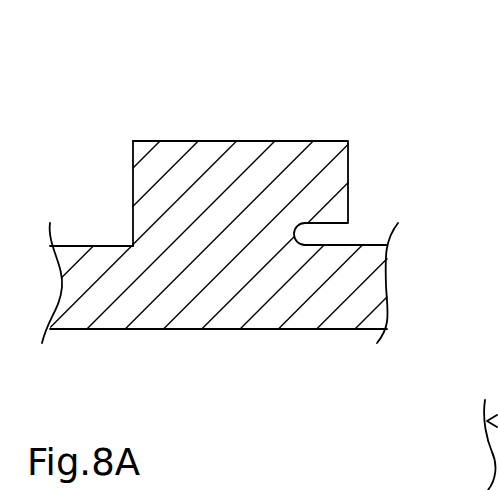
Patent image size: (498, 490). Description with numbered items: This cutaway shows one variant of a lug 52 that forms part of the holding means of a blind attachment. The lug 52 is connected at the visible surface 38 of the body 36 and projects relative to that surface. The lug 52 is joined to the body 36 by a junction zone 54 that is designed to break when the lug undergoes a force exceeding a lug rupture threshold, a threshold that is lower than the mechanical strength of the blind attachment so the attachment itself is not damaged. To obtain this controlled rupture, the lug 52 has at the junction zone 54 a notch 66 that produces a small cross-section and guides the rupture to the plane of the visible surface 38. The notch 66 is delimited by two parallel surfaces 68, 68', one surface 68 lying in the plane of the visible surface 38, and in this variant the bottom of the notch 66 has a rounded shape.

The body 36 is at (214, 322).
The visible surface 38 is at (90, 250).
The lug 52 is at (248, 152).
The junction zone 54 is at (392, 188).
The notch 66 is at (326, 222).
The surface 68 is at (338, 313).
The surface 68' is at (367, 125).